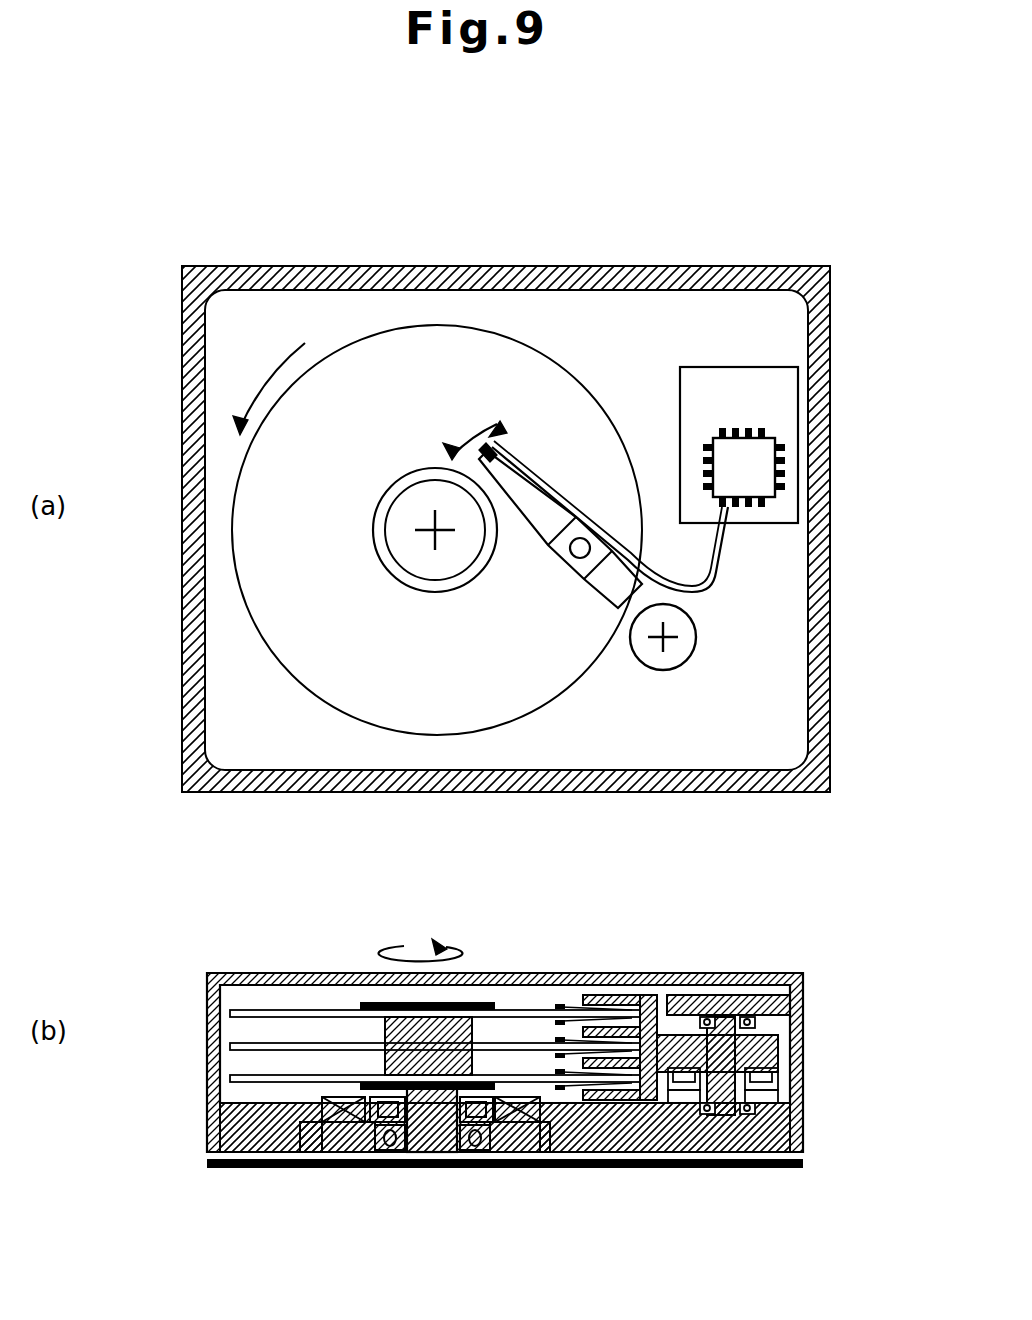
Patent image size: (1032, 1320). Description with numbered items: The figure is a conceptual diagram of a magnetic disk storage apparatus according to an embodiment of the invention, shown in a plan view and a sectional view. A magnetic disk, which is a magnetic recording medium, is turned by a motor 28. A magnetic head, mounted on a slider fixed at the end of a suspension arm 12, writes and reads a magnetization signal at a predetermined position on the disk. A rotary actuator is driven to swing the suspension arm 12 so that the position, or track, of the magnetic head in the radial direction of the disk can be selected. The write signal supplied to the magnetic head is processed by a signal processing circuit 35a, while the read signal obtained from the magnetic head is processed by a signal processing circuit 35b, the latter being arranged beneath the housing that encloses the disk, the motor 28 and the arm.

The suspension arm 12 is at (534, 514).
The motor 28 is at (434, 1150).
The signal processing circuit 35a is at (757, 453).
The signal processing circuit 35b is at (722, 1166).